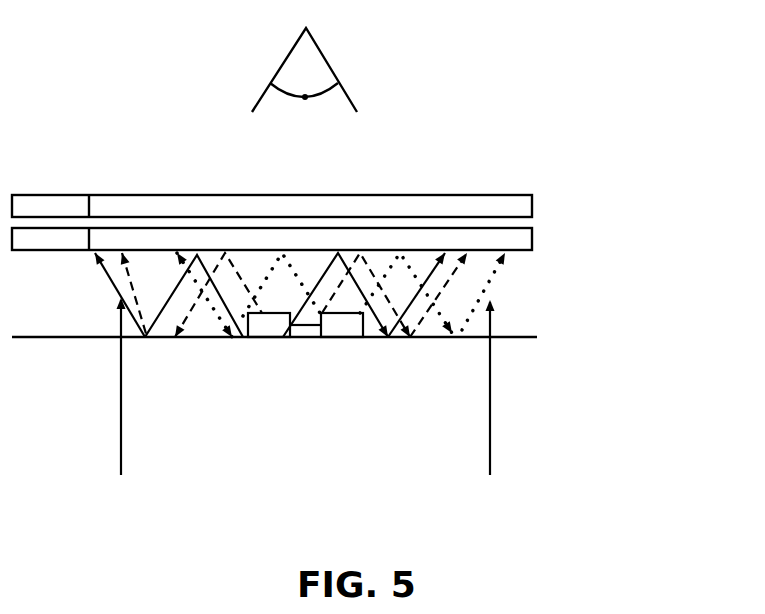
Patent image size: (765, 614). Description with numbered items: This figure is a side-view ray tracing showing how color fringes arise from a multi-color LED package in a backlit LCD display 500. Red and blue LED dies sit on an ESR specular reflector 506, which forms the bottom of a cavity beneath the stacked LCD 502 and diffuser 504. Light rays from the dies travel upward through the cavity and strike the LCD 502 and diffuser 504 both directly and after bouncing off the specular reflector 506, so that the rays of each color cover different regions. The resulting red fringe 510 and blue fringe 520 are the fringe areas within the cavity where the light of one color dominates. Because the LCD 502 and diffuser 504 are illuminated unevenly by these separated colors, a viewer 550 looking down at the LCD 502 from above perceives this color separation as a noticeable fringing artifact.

The backlit LCD display 500 is at (600, 178).
The LCD 502 is at (447, 207).
The diffuser 504 is at (517, 233).
The ESR specular reflector 506 is at (541, 341).
The red fringe 510 is at (489, 401).
The blue fringe 520 is at (119, 400).
The viewer 550 is at (333, 63).